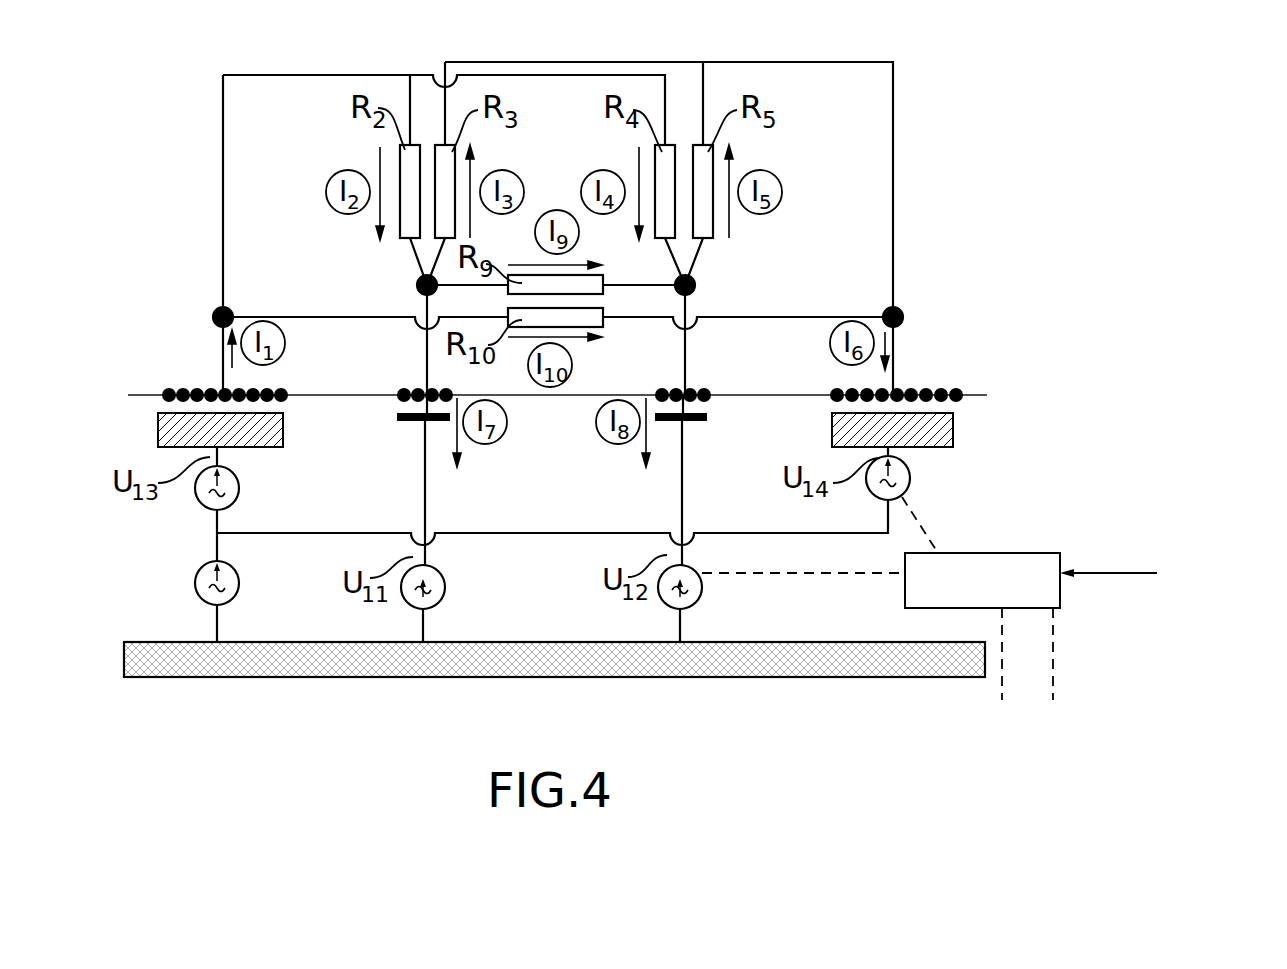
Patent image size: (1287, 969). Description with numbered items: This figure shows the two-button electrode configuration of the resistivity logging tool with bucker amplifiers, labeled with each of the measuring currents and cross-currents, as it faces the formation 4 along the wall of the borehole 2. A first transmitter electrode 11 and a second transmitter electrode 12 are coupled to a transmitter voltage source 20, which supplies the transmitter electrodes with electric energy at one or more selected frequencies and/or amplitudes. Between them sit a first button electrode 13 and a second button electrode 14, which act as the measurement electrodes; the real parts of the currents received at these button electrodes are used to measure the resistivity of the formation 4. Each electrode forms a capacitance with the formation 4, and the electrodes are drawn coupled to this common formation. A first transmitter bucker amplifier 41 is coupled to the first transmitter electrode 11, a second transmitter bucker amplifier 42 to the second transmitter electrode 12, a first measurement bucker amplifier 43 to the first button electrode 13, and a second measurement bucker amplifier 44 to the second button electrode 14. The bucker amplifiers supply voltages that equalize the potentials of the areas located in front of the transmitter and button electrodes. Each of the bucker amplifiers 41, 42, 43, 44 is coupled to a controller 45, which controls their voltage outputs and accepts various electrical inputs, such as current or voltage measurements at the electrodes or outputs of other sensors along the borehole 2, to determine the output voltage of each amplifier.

The borehole 2 is at (975, 395).
The formation 4 is at (154, 326).
The first transmitter electrode 11 is at (283, 427).
The second transmitter electrode 12 is at (933, 450).
The first button electrode 13 is at (413, 423).
The second button electrode 14 is at (697, 423).
The transmitter voltage source 20 is at (195, 585).
The first transmitter bucker amplifier 41 is at (239, 490).
The second transmitter bucker amplifier 42 is at (910, 480).
The first measurement bucker amplifier 43 is at (445, 585).
The second measurement bucker amplifier 44 is at (702, 590).
The controller 45 is at (1017, 553).